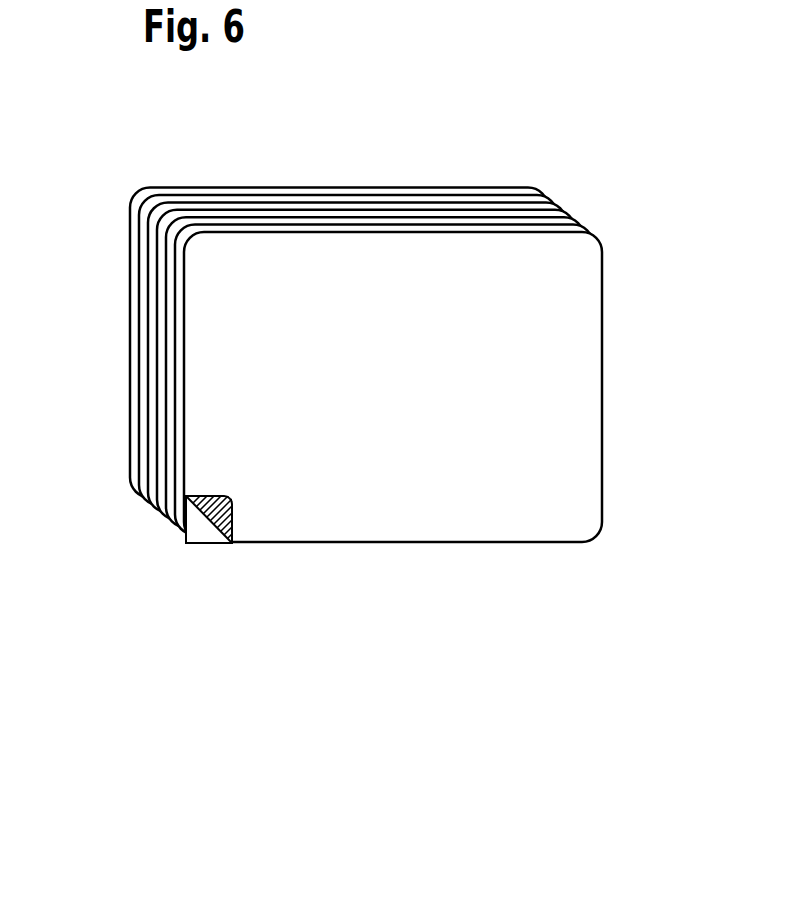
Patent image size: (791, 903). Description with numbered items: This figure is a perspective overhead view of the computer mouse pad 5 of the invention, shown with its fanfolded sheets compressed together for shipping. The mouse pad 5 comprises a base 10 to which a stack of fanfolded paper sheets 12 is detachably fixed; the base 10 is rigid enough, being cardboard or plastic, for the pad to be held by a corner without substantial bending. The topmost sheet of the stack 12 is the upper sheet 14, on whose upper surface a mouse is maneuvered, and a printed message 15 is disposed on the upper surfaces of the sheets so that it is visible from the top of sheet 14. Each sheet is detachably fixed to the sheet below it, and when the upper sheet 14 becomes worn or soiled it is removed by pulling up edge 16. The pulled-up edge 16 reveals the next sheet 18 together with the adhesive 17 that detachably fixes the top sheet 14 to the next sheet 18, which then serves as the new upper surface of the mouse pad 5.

The mouse pad 5 is at (368, 625).
The base 10 is at (130, 232).
The stack of fanfolded paper sheets 12 is at (355, 218).
The upper sheet 14 is at (448, 505).
The printed message 15 is at (508, 347).
The pulled-up edge 16 is at (212, 495).
The adhesive 17 is at (230, 513).
The next sheet 18 is at (201, 526).